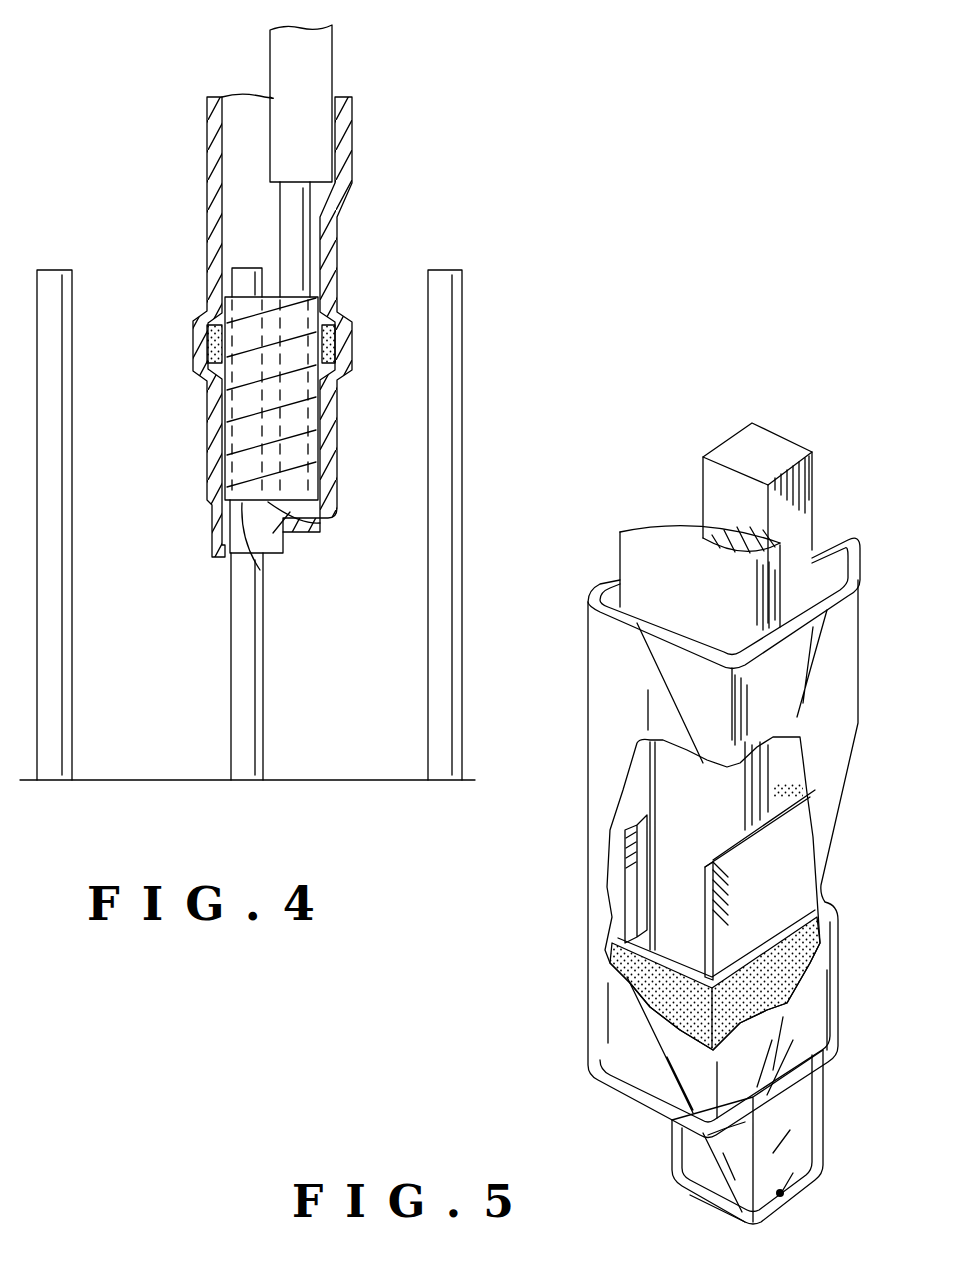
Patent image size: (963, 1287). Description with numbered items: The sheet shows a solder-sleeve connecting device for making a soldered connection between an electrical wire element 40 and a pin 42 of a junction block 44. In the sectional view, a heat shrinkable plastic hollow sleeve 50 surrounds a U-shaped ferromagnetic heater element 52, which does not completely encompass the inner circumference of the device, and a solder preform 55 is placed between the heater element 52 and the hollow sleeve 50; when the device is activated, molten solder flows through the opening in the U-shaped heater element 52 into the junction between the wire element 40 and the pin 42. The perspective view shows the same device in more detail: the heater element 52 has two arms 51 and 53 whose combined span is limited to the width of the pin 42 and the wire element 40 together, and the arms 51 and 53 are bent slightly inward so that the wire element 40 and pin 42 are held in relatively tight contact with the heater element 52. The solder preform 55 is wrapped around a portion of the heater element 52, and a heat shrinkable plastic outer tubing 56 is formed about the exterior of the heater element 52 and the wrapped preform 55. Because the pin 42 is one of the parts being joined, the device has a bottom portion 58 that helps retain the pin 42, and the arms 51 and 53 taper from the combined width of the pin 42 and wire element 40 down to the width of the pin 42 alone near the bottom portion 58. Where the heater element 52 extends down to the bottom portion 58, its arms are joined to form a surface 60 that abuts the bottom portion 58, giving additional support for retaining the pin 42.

In FIG. 4, the electrical wire element 40 is at (333, 48).
In FIG. 5, the electrical wire element 40 is at (620, 550).
In FIG. 4, the pin 42 is at (231, 630).
In FIG. 5, the pin 42 is at (703, 478).
In FIG. 4, the junction block 44 is at (280, 223).
In FIG. 4, the heat shrinkable plastic hollow sleeve 50 is at (353, 250).
In FIG. 5, the arm 51 is at (630, 887).
In FIG. 4, the U-shaped ferromagnetic heater element 52 is at (260, 570).
In FIG. 5, the U-shaped ferromagnetic heater element 52 is at (792, 847).
In FIG. 5, the arm 53 is at (730, 863).
In FIG. 4, the solder preform 55 is at (205, 348).
In FIG. 5, the solder preform 55 is at (638, 1077).
In FIG. 5, the heat shrinkable plastic outer tubing 56 is at (588, 678).
In FIG. 5, the bottom portion 58 is at (727, 1222).
In FIG. 5, the surface 60 is at (780, 1195).